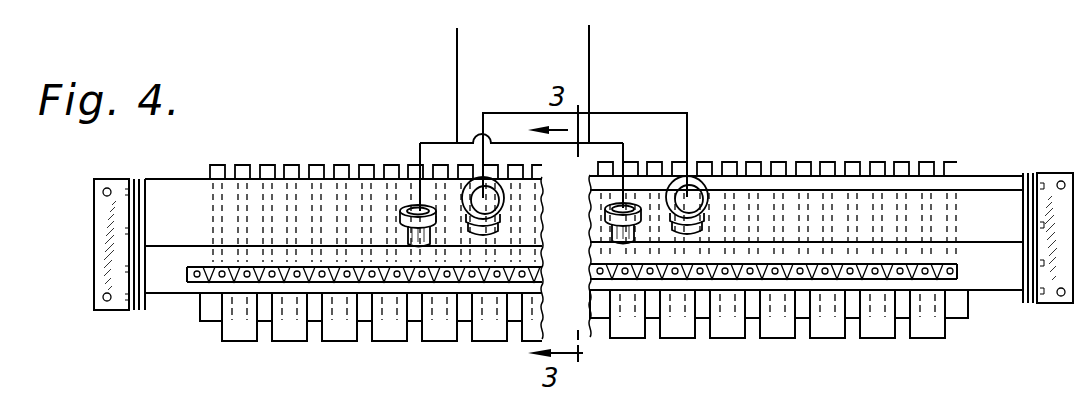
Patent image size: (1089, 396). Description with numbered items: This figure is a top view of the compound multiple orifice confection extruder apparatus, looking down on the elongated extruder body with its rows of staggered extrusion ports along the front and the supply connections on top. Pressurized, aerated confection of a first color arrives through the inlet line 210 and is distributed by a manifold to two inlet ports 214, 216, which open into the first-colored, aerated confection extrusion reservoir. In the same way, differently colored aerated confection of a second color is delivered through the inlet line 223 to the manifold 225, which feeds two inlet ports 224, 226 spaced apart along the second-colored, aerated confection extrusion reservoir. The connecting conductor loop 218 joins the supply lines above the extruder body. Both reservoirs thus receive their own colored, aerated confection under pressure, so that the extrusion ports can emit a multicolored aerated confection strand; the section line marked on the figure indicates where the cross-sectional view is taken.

The inlet line 210 is at (590, 44).
The inlet port 214 is at (515, 173).
The inlet port 216 is at (668, 180).
The connecting conductor loop 218 is at (688, 130).
The inlet line 223 is at (455, 59).
The inlet port 224 is at (382, 167).
The manifold 225 is at (420, 143).
The inlet port 226 is at (639, 190).